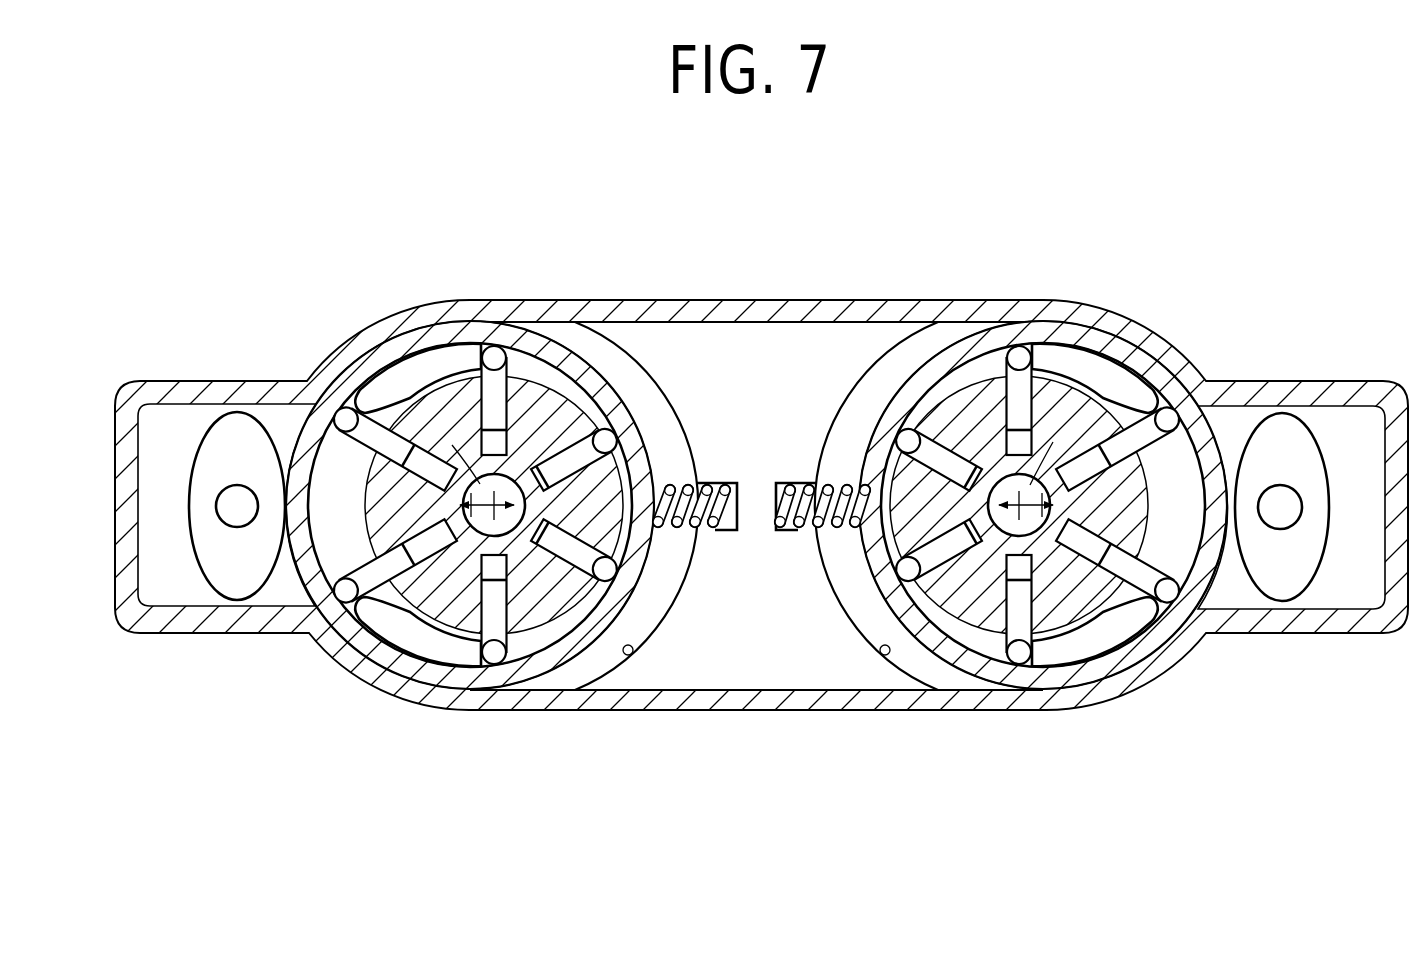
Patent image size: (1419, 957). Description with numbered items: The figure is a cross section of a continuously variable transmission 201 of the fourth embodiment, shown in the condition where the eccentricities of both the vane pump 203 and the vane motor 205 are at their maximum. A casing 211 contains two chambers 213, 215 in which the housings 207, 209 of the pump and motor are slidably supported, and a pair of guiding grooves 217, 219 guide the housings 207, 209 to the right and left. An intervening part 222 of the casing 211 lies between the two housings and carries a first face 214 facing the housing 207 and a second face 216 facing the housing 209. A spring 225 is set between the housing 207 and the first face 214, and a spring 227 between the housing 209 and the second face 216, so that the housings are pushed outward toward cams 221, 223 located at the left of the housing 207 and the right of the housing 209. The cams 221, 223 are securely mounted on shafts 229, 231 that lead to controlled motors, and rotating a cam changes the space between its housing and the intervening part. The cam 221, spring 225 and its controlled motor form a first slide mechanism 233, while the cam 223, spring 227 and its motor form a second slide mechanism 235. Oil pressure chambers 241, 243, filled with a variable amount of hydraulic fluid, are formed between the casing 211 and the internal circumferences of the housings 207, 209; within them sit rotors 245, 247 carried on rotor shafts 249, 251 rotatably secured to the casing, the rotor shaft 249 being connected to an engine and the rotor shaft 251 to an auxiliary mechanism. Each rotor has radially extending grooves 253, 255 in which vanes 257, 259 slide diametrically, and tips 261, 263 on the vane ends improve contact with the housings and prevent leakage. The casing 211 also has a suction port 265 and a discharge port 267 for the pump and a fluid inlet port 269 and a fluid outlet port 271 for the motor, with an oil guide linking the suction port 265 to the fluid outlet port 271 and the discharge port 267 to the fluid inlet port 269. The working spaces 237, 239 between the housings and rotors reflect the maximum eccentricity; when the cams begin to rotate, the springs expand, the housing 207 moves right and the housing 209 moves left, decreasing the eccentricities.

The continuously variable transmission 201 is at (761, 451).
The vane pump 203 is at (490, 470).
The vane motor 205 is at (1086, 473).
The housing 207 is at (438, 333).
The housing 209 is at (1070, 340).
The casing 211 is at (762, 300).
The chamber 213 is at (608, 360).
The first face 214 is at (632, 652).
The chamber 215 is at (904, 362).
The second face 216 is at (873, 645).
The guiding groove 217 is at (526, 493).
The guiding groove 219 is at (980, 493).
The cam 221 is at (208, 478).
The intervening part 222 is at (747, 657).
The cam 223 is at (1287, 557).
The spring 225 is at (673, 530).
The spring 227 is at (838, 530).
The shaft 229 is at (230, 512).
The shaft 231 is at (1283, 505).
The first slide mechanism 233 is at (227, 436).
The second slide mechanism 235 is at (1292, 410).
The first working chamber 237 is at (323, 440).
The second working chamber 239 is at (1186, 425).
The oil pressure chamber 241 is at (360, 559).
The oil pressure chamber 243 is at (1206, 554).
The rotor 245 is at (567, 440).
The rotor 247 is at (982, 440).
The rotor shaft 249 is at (512, 537).
The rotor shaft 251 is at (992, 565).
The radially extending groove 253 is at (415, 470).
The radially extending groove 255 is at (1085, 470).
The vane 257 is at (403, 550).
The vane 259 is at (1022, 596).
The tip 261 is at (436, 708).
The tip 263 is at (1035, 645).
The suction port 265 is at (385, 383).
The discharge port 267 is at (402, 642).
The fluid inlet port 269 is at (1115, 645).
The fluid outlet port 271 is at (1130, 385).